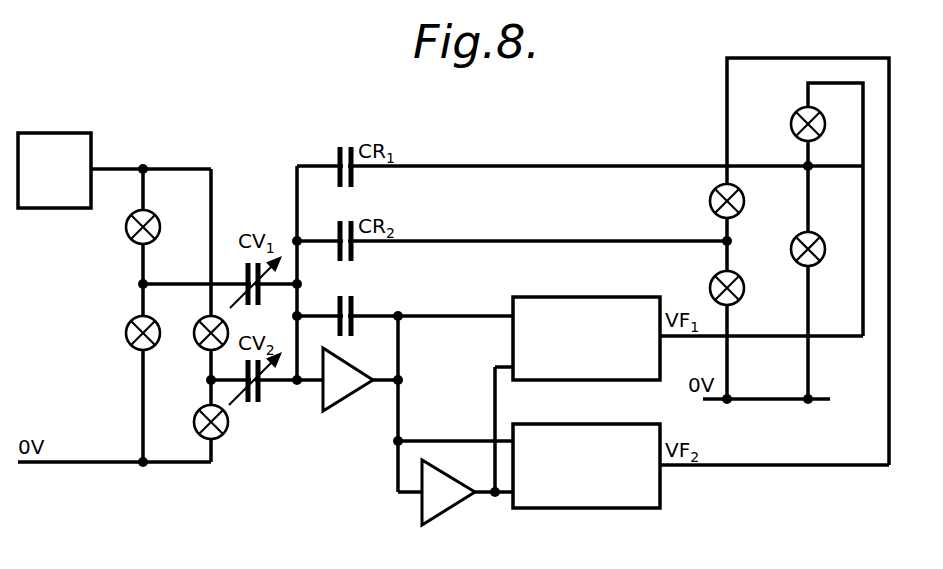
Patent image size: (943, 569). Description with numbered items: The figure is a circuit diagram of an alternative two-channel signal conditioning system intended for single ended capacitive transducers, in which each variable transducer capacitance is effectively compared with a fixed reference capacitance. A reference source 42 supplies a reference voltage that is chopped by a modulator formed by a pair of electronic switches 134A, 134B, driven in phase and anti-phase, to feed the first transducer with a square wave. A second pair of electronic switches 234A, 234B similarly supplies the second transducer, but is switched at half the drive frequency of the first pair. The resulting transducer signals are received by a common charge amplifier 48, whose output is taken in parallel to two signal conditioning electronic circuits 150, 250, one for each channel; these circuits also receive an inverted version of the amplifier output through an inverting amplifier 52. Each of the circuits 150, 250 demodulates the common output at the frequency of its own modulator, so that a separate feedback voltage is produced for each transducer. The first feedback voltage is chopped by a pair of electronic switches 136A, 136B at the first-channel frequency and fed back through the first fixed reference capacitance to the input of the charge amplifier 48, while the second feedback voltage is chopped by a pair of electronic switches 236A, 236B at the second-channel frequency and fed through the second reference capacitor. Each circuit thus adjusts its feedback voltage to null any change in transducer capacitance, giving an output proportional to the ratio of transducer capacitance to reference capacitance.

The reference source 42 is at (62, 133).
The electronic switch 134A is at (127, 232).
The electronic switch 134B is at (128, 327).
The electronic switch 234A is at (198, 340).
The electronic switch 234B is at (228, 428).
The charge amplifier 48 is at (362, 400).
The inverting amplifier 52 is at (462, 507).
The signal conditioning electronic circuit 150 is at (555, 296).
The signal conditioning electronic circuit 250 is at (558, 423).
The electronic switch 136A is at (792, 118).
The electronic switch 136B is at (792, 250).
The electronic switch 236A is at (711, 202).
The electronic switch 236B is at (711, 283).